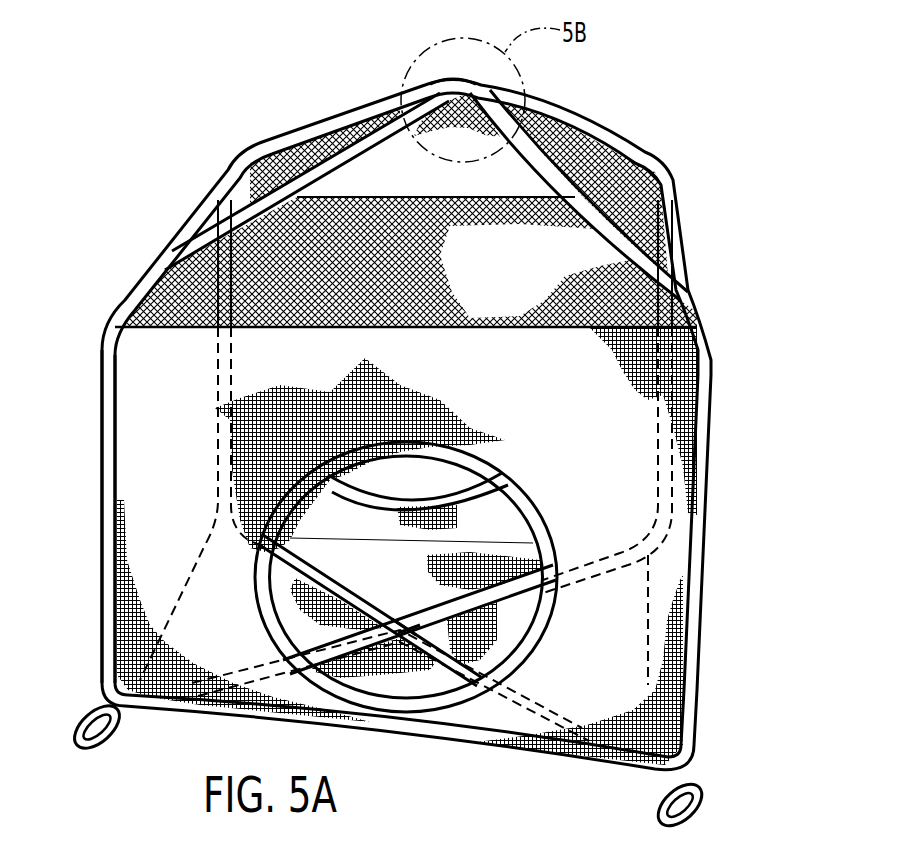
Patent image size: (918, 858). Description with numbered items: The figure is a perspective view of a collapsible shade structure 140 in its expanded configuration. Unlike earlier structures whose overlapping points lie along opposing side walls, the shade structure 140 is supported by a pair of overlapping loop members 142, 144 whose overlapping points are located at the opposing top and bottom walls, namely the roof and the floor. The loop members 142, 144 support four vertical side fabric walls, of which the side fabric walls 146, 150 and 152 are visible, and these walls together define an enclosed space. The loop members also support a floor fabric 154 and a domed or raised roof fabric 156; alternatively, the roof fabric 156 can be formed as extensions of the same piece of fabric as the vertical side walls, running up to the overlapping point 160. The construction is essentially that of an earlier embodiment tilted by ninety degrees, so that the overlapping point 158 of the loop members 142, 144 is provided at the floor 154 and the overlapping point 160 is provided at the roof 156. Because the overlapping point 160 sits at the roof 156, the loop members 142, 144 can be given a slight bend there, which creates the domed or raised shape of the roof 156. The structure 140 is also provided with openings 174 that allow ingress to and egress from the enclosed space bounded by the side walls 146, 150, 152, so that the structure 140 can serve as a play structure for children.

The shade structure 140 is at (436, 421).
The loop member 142 is at (703, 544).
The loop member 144 is at (105, 495).
The vertical side fabric wall 146 is at (542, 398).
The vertical side fabric wall 150 is at (515, 531).
The vertical side fabric wall 152 is at (201, 238).
The floor fabric 154 is at (400, 668).
The roof fabric 156 is at (512, 170).
The overlapping point 158 is at (407, 612).
The overlapping point 160 is at (449, 70).
The openings 174 is at (398, 509).